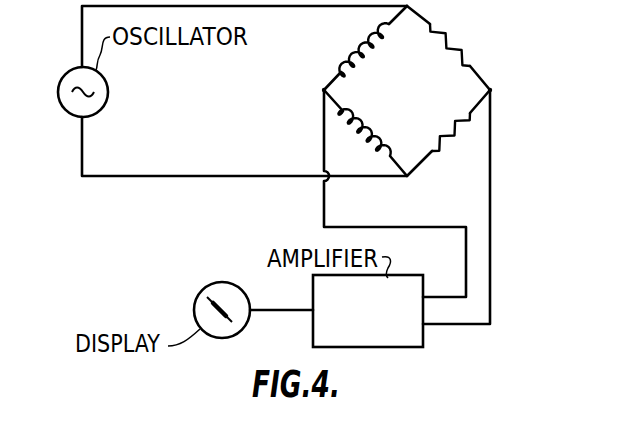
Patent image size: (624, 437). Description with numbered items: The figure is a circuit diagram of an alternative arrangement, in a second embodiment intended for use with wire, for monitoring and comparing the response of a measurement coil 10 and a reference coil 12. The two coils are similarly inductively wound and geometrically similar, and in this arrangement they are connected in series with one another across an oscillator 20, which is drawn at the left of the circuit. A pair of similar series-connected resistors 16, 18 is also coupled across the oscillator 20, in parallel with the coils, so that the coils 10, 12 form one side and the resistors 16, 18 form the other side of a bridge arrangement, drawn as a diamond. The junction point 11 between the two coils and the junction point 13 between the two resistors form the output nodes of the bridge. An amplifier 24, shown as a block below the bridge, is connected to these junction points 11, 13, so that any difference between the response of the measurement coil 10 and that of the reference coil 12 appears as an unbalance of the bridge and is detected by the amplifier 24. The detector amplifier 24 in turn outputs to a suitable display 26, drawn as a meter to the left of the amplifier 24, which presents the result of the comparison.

The measurement coil 10 is at (426, 100).
The junction point 11 is at (322, 90).
The reference coil 12 is at (424, 56).
The junction point 13 is at (488, 90).
The resistor 16 is at (450, 132).
The resistor 18 is at (522, 25).
The oscillator 20 is at (142, 126).
The amplifier 24 is at (382, 296).
The display 26 is at (194, 308).